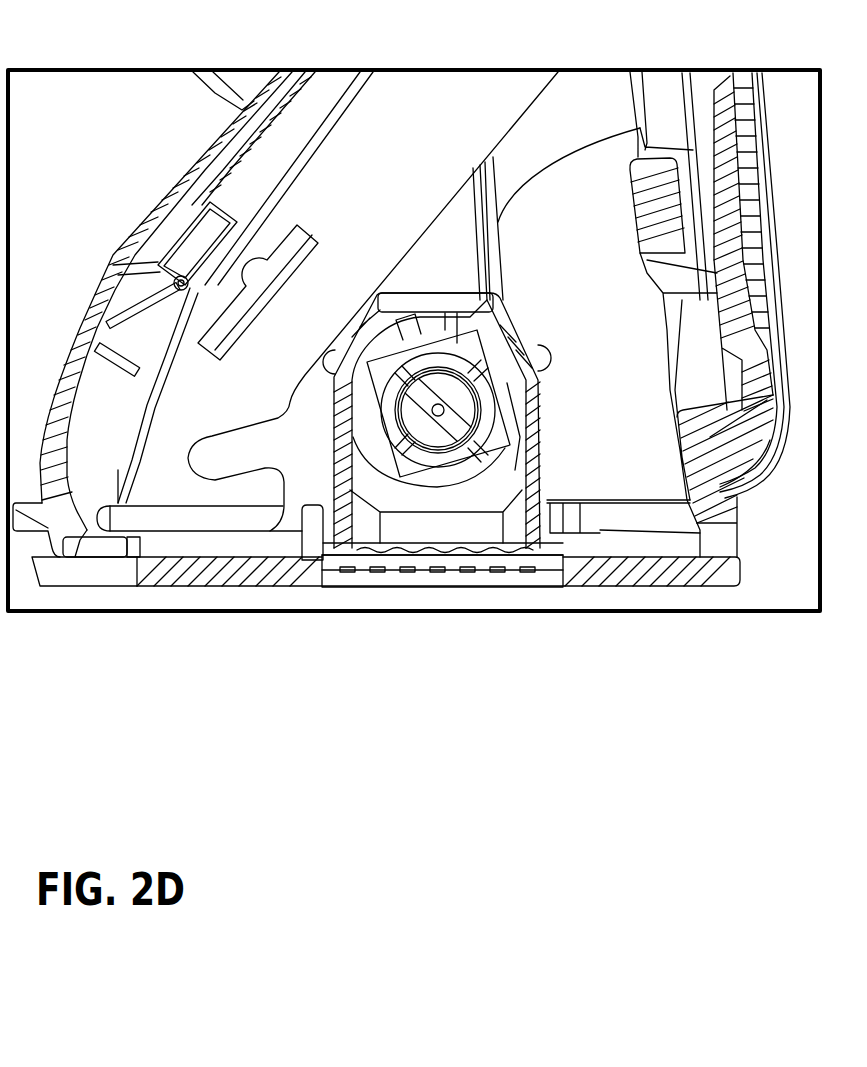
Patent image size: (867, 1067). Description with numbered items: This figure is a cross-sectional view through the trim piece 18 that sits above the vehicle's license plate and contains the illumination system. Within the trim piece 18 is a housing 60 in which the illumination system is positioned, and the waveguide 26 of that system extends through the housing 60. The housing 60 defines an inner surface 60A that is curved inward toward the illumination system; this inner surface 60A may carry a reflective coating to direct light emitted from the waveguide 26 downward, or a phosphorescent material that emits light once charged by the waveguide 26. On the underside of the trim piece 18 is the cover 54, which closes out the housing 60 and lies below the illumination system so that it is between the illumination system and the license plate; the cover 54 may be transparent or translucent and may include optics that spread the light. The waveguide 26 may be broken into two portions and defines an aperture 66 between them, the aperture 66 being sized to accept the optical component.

The trim piece 18 is at (122, 162).
The waveguide 26 is at (436, 418).
The cover 54 is at (383, 553).
The housing 60 is at (537, 403).
The inner surface 60A is at (512, 432).
The aperture 66 is at (460, 343).